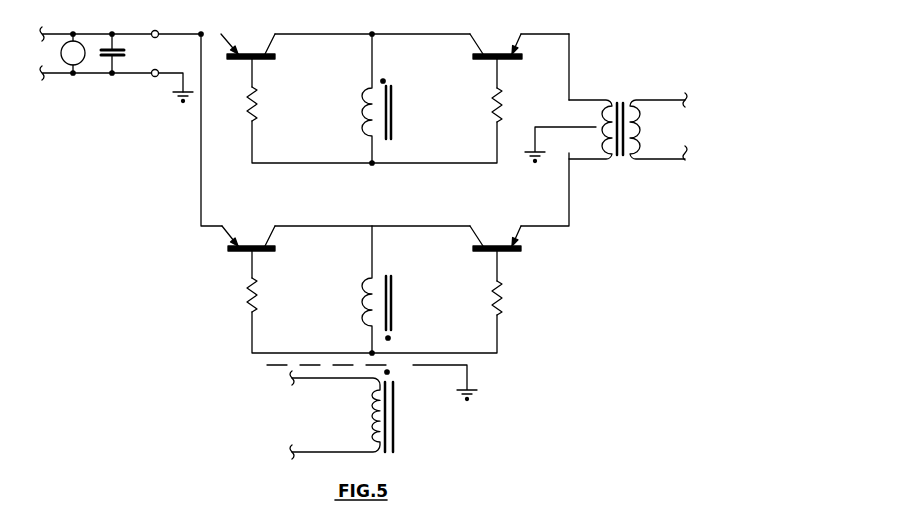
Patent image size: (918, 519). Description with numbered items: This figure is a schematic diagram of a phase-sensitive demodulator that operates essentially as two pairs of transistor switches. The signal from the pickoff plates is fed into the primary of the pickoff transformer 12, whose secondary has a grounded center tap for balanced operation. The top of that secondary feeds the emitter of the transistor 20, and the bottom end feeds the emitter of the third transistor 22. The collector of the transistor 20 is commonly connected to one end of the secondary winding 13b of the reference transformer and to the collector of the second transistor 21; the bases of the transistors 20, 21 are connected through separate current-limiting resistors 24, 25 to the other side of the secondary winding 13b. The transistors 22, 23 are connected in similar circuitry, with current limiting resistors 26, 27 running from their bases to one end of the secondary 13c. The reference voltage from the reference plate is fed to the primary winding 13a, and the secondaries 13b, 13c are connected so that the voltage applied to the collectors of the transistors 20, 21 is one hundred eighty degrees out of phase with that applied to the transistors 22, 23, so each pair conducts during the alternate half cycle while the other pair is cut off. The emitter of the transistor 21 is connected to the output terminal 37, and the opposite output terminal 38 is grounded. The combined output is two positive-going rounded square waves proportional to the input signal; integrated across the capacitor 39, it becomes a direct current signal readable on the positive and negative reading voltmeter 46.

The pickoff transformer 12 is at (612, 105).
The primary winding 13a is at (395, 405).
The secondary winding 13b is at (393, 113).
The secondary winding 13c is at (393, 295).
The transistor 20 is at (522, 60).
The transistor 21 is at (275, 60).
The transistor 22 is at (521, 253).
The transistor 23 is at (275, 250).
The current-limiting resistor 24 is at (503, 106).
The current-limiting resistor 25 is at (258, 95).
The current limiting resistor 26 is at (503, 300).
The current limiting resistor 27 is at (258, 297).
The output terminal 37 is at (157, 31).
The input terminal 38 is at (153, 76).
The capacitor 39 is at (126, 57).
The voltmeter 46 is at (63, 62).